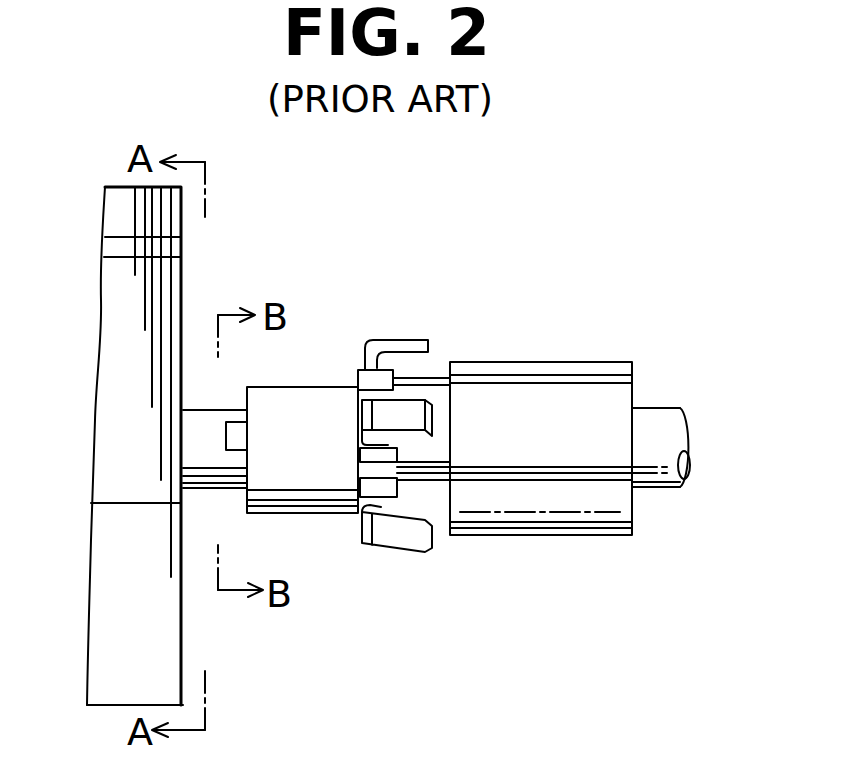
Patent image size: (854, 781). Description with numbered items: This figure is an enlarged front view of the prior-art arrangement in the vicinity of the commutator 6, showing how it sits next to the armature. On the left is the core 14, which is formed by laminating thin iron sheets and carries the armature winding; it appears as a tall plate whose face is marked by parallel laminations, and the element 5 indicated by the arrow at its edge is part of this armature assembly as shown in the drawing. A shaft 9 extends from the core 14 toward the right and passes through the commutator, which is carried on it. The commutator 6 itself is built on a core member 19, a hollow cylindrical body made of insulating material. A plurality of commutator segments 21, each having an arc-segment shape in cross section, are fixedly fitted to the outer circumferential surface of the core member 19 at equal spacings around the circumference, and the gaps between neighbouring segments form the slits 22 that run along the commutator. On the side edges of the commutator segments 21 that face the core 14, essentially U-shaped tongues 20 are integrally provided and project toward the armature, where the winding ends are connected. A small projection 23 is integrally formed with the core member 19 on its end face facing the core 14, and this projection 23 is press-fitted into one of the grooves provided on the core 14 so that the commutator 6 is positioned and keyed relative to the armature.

The printed circuit board 5 is at (195, 239).
The core 14 is at (170, 303).
The shaft 9 is at (212, 460).
The projection 23 is at (232, 433).
The core member 19 is at (290, 400).
The tongue 20 is at (410, 346).
The commutator segment 21 is at (497, 400).
The slit 22 is at (580, 475).
The commutator 6 is at (585, 362).